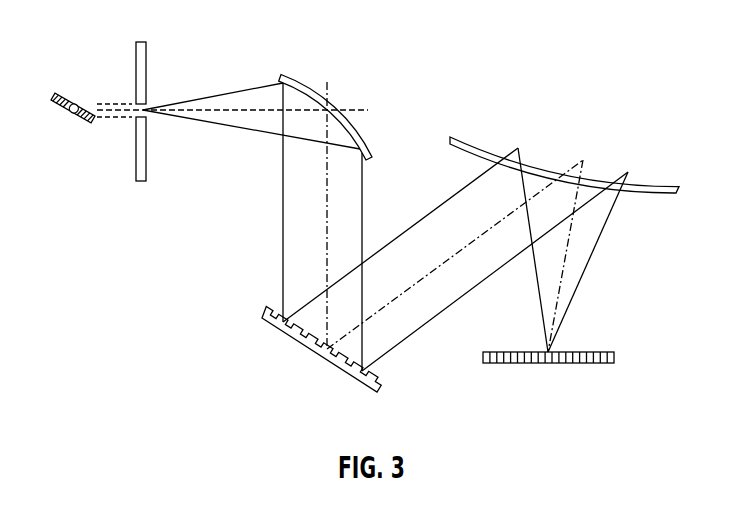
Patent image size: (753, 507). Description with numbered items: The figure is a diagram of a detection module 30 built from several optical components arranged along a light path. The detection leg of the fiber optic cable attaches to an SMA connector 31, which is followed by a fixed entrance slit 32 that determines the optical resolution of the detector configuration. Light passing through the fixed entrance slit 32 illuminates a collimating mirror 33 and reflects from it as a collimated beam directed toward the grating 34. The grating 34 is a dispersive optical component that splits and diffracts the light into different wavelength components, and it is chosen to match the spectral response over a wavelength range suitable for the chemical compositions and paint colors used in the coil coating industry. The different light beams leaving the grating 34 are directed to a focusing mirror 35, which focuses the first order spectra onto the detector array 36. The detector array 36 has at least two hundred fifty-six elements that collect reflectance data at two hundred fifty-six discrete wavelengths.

The detection module 30 is at (416, 40).
The SMA connector 31 is at (73, 112).
The fixed entrance slit 32 is at (147, 46).
The collimating mirror 33 is at (367, 131).
The grating 34 is at (296, 343).
The focusing mirror 35 is at (548, 144).
The detector array 36 is at (576, 365).